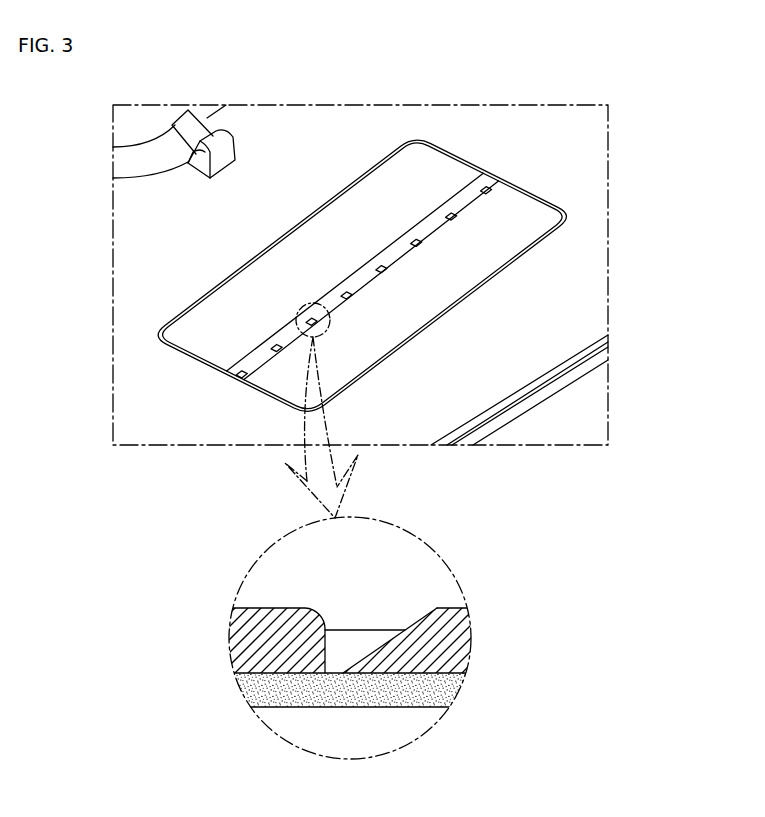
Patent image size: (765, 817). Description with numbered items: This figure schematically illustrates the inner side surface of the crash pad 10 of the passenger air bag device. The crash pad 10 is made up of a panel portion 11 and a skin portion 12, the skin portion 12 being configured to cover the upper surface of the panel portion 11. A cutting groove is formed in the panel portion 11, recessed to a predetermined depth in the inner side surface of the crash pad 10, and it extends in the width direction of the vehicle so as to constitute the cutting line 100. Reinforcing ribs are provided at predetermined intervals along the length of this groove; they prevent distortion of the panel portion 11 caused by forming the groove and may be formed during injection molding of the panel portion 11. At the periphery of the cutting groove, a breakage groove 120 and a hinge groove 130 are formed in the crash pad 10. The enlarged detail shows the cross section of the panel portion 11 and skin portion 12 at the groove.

The crash pad 10 is at (423, 118).
The panel portion 11 is at (509, 133).
The skin portion 12 is at (268, 692).
The cutting line 100 is at (333, 673).
The breakage groove 120 is at (528, 191).
The hinge groove 130 is at (470, 295).